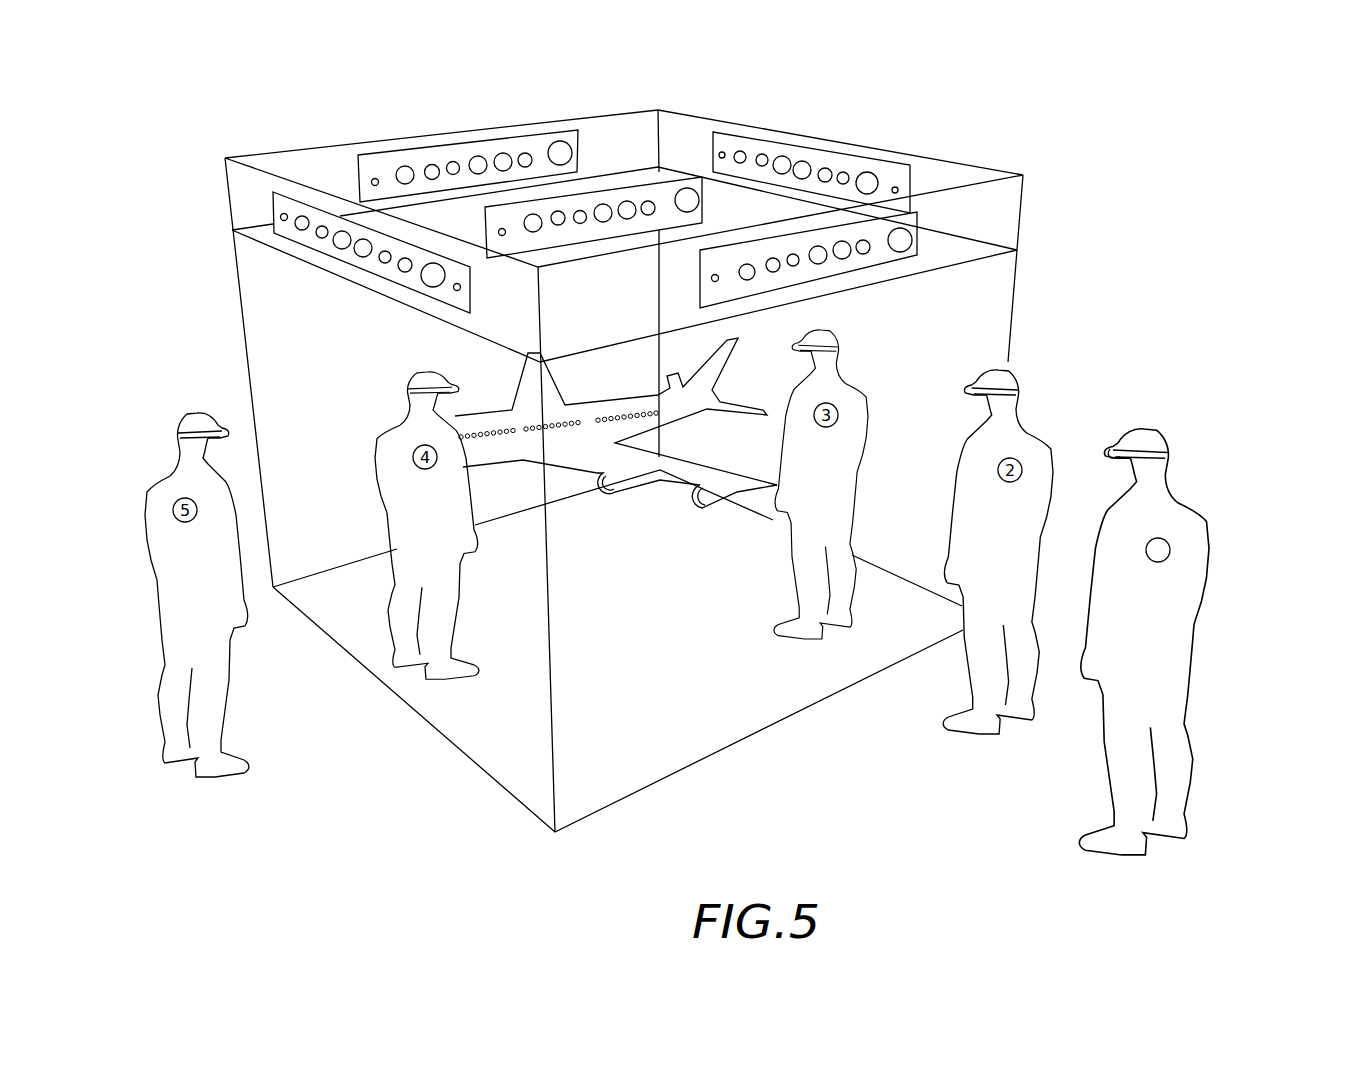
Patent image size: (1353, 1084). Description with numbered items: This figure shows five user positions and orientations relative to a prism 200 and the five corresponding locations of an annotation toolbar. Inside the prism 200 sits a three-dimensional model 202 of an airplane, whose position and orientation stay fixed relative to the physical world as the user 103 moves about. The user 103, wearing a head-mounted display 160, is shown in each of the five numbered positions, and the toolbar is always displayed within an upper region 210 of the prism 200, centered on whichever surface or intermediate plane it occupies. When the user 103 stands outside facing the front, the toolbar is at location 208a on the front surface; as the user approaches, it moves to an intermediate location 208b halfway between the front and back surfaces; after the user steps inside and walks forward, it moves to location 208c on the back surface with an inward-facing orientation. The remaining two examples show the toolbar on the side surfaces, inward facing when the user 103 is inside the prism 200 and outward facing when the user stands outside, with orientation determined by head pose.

The user 103 is at (1189, 503).
The head-mounted display 160 is at (1110, 449).
The prism 200 is at (247, 355).
The 3D model 202 is at (500, 418).
The toolbar location 208a is at (882, 232).
The toolbar location 208b is at (667, 197).
The toolbar location 208c is at (537, 150).
The upper region 210 is at (692, 185).